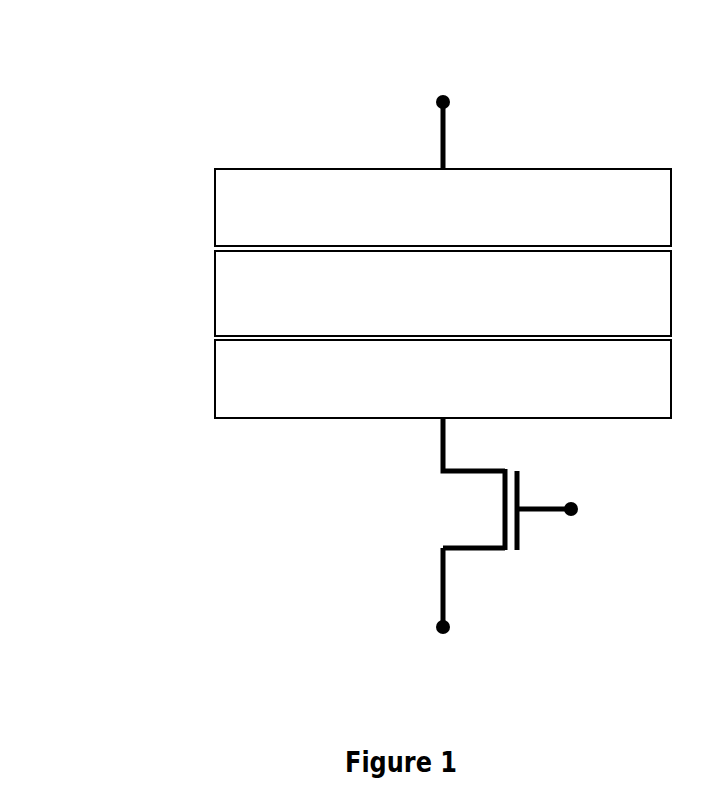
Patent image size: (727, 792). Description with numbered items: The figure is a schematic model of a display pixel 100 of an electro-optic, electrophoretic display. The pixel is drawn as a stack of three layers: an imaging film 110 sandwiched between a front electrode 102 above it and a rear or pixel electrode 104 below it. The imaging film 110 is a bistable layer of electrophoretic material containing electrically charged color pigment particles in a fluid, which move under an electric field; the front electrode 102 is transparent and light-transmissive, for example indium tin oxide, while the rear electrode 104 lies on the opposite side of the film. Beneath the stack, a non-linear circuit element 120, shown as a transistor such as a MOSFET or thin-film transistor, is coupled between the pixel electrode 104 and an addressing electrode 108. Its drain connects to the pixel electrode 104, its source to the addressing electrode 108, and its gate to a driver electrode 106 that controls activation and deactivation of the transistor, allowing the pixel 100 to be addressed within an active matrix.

The display pixel 100 is at (63, 73).
The front electrode 102 is at (243, 166).
The imaging film 110 is at (208, 262).
The rear or pixel electrode 104 is at (208, 375).
The driver electrode 106 is at (565, 497).
The addressing electrode 108 is at (428, 610).
The non-linear circuit element 120 is at (520, 565).